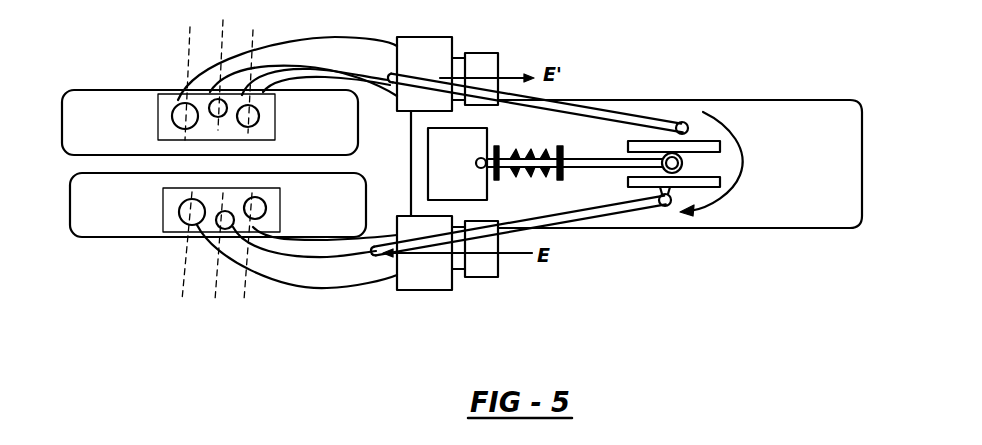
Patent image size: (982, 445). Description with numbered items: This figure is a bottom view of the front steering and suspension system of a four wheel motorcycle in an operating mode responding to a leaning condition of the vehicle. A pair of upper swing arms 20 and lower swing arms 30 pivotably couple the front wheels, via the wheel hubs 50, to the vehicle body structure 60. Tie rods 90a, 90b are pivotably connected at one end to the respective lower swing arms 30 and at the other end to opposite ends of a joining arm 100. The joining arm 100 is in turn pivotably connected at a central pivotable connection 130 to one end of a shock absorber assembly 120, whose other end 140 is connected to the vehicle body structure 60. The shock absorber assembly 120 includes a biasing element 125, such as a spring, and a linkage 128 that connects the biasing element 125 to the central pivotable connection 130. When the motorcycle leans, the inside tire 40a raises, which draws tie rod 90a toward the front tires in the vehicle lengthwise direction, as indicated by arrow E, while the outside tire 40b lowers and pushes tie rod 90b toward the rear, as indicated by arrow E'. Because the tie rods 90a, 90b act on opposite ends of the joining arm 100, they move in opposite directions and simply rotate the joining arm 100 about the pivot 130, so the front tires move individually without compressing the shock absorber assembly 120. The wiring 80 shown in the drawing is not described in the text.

The upper swing arms 20 is at (482, 277).
The lower swing arms 30 is at (210, 248).
The inside tire 40a is at (72, 203).
The outside tire 40b is at (66, 110).
The wheel hub 50 is at (160, 117).
The vehicle body structure 60 is at (805, 99).
The wiring 80 is at (242, 242).
The tie rod 90a is at (605, 230).
The tie rod 90b is at (633, 110).
The joining arm 100 is at (718, 207).
The shock absorber assembly 120 is at (538, 145).
The biasing element 125 is at (538, 175).
The linkage 128 is at (594, 159).
The central pivotable connection 130 is at (683, 162).
The other end 140 is at (487, 188).